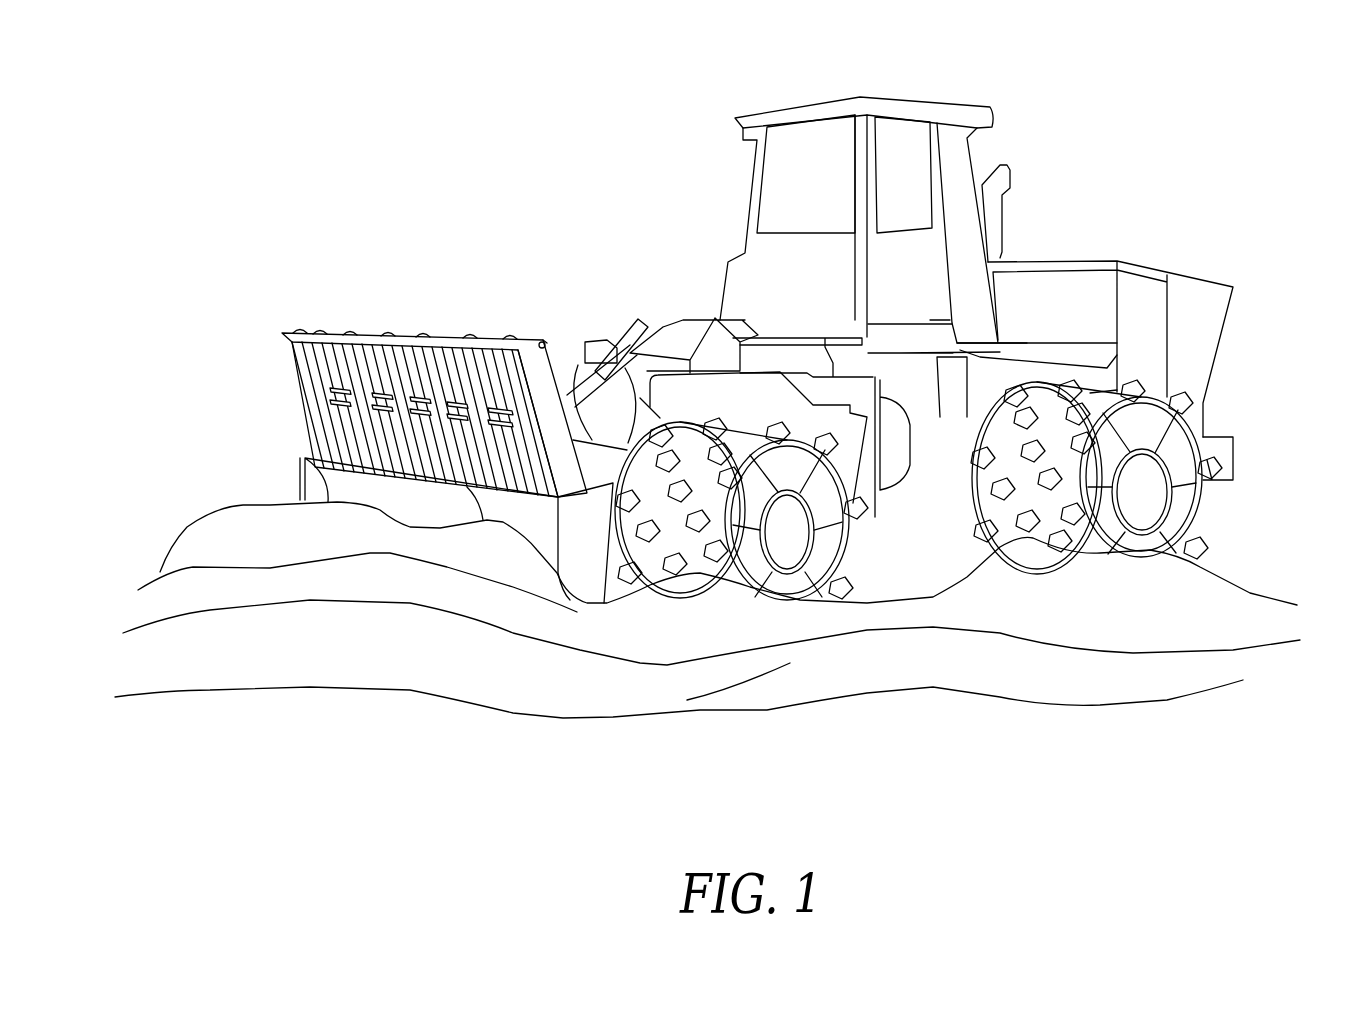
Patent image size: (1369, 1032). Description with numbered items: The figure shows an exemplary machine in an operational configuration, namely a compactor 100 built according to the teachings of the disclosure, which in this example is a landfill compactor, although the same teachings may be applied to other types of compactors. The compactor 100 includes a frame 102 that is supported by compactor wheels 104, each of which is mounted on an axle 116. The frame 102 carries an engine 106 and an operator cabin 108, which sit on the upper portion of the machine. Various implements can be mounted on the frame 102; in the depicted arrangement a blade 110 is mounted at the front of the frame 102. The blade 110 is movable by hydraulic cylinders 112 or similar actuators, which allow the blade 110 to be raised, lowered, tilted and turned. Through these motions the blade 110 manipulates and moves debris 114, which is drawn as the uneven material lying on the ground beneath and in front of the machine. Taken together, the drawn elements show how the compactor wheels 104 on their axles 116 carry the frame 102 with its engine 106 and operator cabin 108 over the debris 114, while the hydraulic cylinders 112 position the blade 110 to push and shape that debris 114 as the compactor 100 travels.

The compactor 100 is at (1087, 217).
The frame 102 is at (975, 380).
The compactor wheels 104 is at (1183, 390).
The engine 106 is at (1058, 262).
The operator cabin 108 is at (790, 115).
The blade 110 is at (340, 328).
The hydraulic cylinders 112 is at (630, 340).
The debris 114 is at (240, 503).
The axle 116 is at (1133, 480).